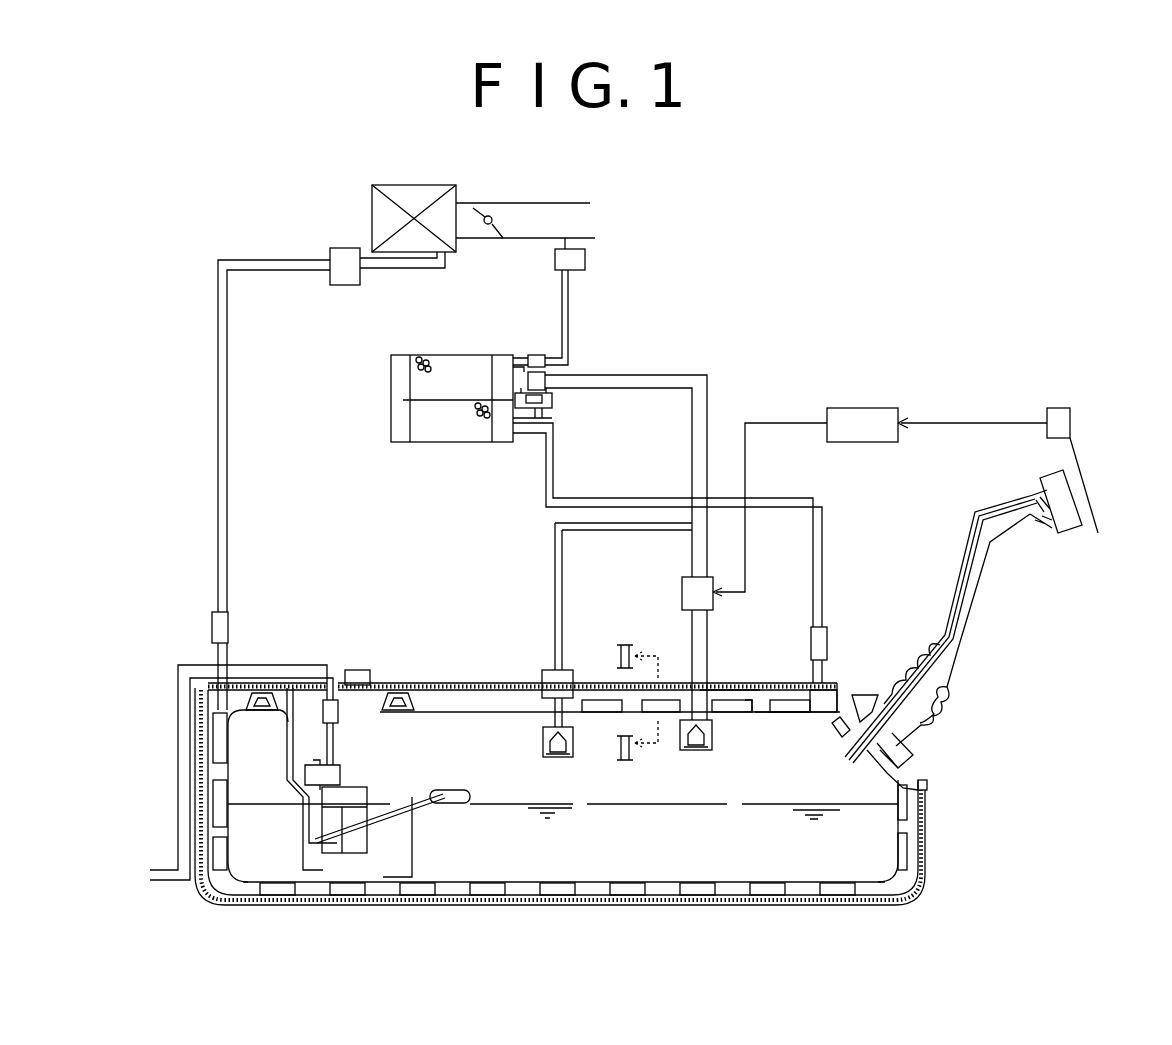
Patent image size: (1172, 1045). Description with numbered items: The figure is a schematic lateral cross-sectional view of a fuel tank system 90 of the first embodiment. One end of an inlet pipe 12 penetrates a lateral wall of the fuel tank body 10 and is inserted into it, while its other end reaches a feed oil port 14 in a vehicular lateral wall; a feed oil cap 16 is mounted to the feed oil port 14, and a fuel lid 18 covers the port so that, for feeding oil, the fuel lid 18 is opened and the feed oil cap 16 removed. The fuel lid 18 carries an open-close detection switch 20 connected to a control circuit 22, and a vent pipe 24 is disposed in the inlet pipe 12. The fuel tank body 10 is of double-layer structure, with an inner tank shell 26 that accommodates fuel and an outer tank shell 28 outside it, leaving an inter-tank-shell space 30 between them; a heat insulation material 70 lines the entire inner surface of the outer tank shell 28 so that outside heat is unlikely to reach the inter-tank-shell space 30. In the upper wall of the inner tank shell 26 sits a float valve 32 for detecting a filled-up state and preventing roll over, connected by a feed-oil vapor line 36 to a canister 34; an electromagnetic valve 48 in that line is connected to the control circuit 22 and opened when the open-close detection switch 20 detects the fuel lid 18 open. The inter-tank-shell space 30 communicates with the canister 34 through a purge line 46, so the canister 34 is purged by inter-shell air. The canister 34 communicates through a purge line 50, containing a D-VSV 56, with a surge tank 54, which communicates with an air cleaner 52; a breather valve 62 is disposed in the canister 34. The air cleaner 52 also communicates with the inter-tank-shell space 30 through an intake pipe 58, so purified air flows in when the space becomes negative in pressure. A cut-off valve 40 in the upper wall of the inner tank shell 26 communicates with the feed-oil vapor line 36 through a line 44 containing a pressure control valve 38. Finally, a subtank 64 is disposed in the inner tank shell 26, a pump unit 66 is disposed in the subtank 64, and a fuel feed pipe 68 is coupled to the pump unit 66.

The fuel tank body 10 is at (937, 788).
The inlet pipe 12 is at (960, 655).
The feed oil port 14 is at (1047, 522).
The feed oil cap 16 is at (1068, 533).
The fuel lid 18 is at (1090, 504).
The open-close detection switch 20 is at (1047, 420).
The control circuit 22 is at (855, 408).
The vent pipe 24 is at (955, 596).
The inner tank shell 26 is at (768, 716).
The outer tank shell 28 is at (746, 684).
The inter-tank-shell space 30 is at (754, 697).
The float valve 32 is at (700, 750).
The canister 34 is at (456, 352).
The feed-oil vapor line 36 is at (692, 375).
The pressure control valve 38 is at (570, 670).
The cut-off valve 40 is at (566, 757).
The line 44 is at (555, 548).
The purge line 46 is at (823, 522).
The electromagnetic valve 48 is at (682, 590).
The purge line 50 is at (570, 332).
The air cleaner 52 is at (445, 186).
The surge tank 54 is at (580, 203).
The D-VSV (vacuum switching valve) 56 is at (585, 262).
The intake pipe 58 is at (217, 374).
The breather valve 62 is at (556, 403).
The subtank 64 is at (412, 850).
The pump unit 66 is at (362, 783).
The fuel feed pipe 68 is at (197, 652).
The heat insulation material 70 is at (598, 683).
The fuel tank system 90 is at (910, 308).